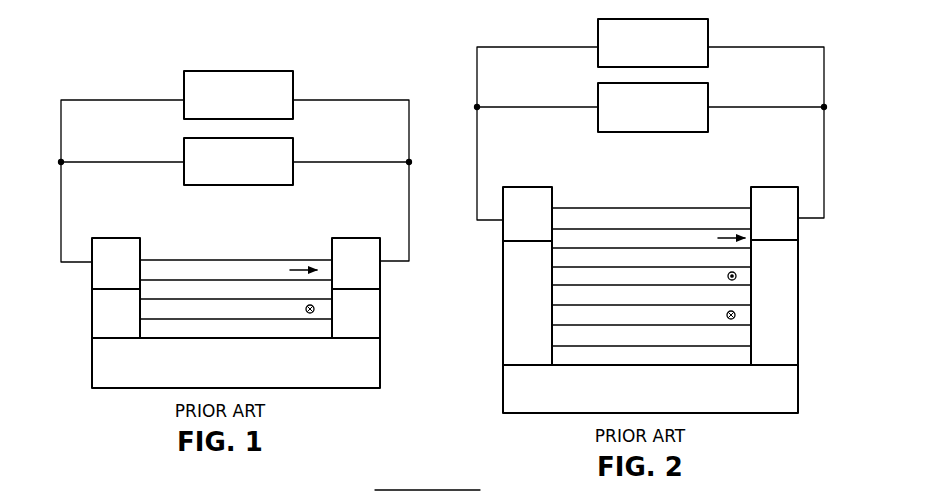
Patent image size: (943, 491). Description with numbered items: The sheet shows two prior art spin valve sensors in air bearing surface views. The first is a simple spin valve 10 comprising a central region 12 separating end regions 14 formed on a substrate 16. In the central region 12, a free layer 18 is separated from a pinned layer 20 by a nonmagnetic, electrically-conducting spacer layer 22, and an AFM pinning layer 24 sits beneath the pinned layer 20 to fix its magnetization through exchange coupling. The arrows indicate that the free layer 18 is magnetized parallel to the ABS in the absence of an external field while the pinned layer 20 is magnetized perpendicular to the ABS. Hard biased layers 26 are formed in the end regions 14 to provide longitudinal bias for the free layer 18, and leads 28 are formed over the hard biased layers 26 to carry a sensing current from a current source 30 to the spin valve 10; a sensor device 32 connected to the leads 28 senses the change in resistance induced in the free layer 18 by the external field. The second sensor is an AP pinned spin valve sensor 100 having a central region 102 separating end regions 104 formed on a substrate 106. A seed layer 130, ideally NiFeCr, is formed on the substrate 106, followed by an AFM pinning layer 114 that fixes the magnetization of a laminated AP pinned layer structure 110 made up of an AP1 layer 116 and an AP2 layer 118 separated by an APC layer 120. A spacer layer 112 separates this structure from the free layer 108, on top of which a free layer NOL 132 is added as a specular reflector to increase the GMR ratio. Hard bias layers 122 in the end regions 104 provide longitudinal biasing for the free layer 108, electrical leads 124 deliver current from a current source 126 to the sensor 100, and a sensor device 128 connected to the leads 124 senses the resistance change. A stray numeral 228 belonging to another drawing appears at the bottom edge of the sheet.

In FIG. 1, the spin valve 10 is at (336, 206).
In FIG. 1, the central region 12 is at (331, 233).
In FIG. 1, the end regions 14 is at (140, 233).
In FIG. 1, the substrate 16 is at (298, 378).
In FIG. 1, the free layer 18 is at (182, 267).
In FIG. 1, the pinned layer 20 is at (328, 312).
In FIG. 1, the spacer layer 22 is at (150, 300).
In FIG. 1, the AFM pinning layer 24 is at (318, 330).
In FIG. 1, the hard biased layers 26 is at (100, 331).
In FIG. 1, the leads 28 is at (102, 274).
In FIG. 1, the current source 30 is at (293, 143).
In FIG. 1, the sensor device 32 is at (277, 72).
In FIG. 2, the AP pinned spin valve sensor 100 is at (468, 222).
In FIG. 2, the central region 102 is at (750, 181).
In FIG. 2, the end regions 104 is at (552, 181).
In FIG. 2, the substrate 106 is at (738, 406).
In FIG. 2, the free layer 108 is at (706, 233).
In FIG. 2, the laminated AP pinned layer structure 110 is at (548, 268).
In FIG. 2, the spacer layer 112 is at (746, 276).
In FIG. 2, the AFM pinning layer 114 is at (553, 340).
In FIG. 2, the AP1 layer 116 is at (545, 318).
In FIG. 2, the AP2 layer 118 is at (746, 282).
In FIG. 2, the APC layer 120 is at (746, 302).
In FIG. 2, the hard bias layers 122 is at (503, 259).
In FIG. 2, the electrical leads 124 is at (503, 236).
In FIG. 2, the current source 126 is at (708, 97).
In FIG. 2, the sensor device 128 is at (700, 43).
In FIG. 2, the seed layer 130 is at (553, 361).
In FIG. 2, the free layer NOL 132 is at (618, 219).
In FIG. 2, the element of adjacent figure (partial) 228 is at (480, 490).